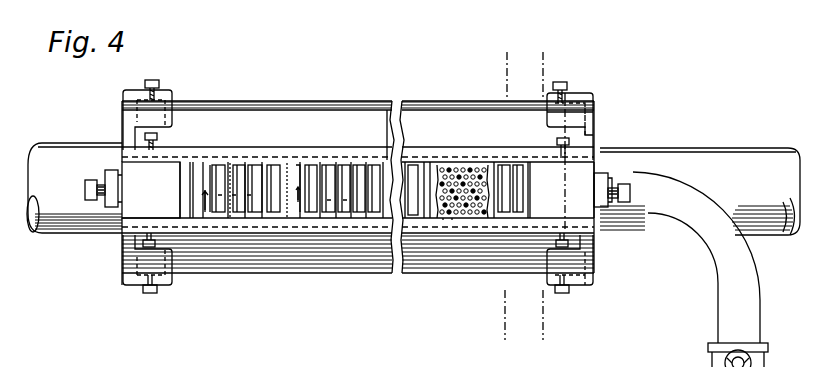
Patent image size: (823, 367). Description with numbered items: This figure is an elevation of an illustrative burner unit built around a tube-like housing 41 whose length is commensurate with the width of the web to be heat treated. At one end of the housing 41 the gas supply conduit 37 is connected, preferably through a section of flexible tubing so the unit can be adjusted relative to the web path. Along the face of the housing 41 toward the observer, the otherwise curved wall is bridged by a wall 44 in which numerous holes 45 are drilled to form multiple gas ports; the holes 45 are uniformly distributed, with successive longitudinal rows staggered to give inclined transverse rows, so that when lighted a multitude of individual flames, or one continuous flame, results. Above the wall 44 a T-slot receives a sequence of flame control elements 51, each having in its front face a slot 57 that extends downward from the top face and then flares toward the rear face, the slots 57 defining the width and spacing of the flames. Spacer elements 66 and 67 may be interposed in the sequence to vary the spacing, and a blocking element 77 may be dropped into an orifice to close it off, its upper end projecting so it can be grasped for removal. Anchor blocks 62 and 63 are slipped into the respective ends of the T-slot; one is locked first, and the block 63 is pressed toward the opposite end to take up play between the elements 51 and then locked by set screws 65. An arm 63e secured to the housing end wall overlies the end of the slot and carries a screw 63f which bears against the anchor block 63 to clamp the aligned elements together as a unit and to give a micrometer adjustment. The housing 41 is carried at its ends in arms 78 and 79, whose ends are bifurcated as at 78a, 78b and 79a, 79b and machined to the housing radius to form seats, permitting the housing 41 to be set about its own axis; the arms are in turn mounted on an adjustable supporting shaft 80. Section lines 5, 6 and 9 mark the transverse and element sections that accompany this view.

The section line 5- 5 is at (543, 62).
The section line 6- 6 is at (530, 62).
The section line 9- 9 is at (249, 211).
The conduit 37 is at (718, 294).
The housing 41 is at (284, 275).
The wall 44 is at (468, 220).
The holes 45 is at (452, 220).
The elements 51 is at (241, 163).
The slot 57 is at (247, 200).
The anchor block 62 is at (562, 162).
The anchor block 63 is at (157, 190).
The arm 63e is at (112, 170).
The screw 63f is at (90, 195).
The set screws 65 is at (158, 136).
The spacer element 66 is at (190, 159).
The spacer element 67 is at (298, 170).
The blocking element 77 is at (413, 173).
The arm 78 is at (174, 94).
The arm portion 78a is at (128, 104).
The arm portion 78b is at (133, 287).
The arm 79 is at (598, 96).
The arm portion 79a is at (591, 111).
The arm portion 79b is at (601, 288).
The shaft 80 is at (48, 145).